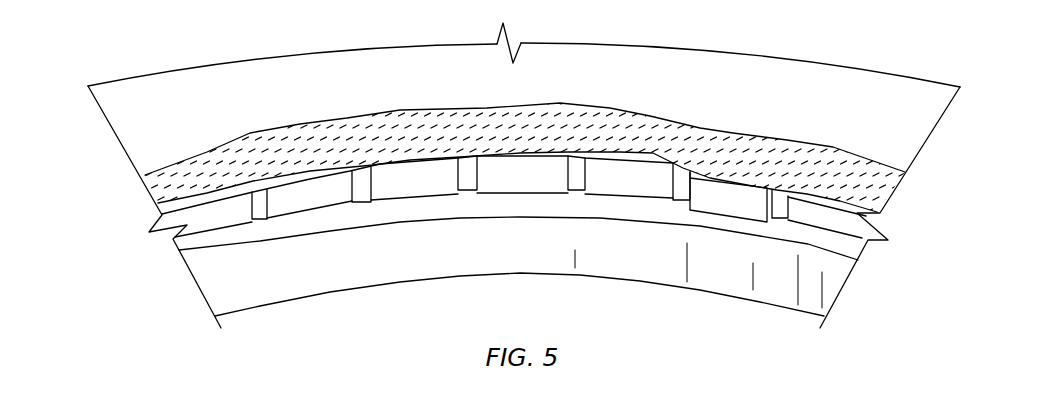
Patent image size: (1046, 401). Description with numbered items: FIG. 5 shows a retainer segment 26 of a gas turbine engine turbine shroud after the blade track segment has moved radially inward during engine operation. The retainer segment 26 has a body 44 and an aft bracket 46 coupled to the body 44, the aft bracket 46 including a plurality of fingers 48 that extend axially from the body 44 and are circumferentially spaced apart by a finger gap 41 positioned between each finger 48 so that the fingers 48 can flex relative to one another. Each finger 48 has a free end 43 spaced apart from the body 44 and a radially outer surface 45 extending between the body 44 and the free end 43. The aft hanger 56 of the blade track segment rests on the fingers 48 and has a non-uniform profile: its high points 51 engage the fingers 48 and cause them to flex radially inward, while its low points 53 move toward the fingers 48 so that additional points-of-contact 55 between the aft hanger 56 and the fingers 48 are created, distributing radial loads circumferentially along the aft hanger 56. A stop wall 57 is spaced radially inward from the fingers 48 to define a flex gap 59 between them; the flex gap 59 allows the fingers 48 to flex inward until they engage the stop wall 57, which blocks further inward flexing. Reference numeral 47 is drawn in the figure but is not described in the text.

The retainer segment 26 is at (89, 115).
The finger gap 41 is at (265, 230).
The free end 43 is at (302, 199).
The body 44 is at (862, 114).
The radially outer surface 45 is at (879, 197).
The aft bracket 46 is at (874, 242).
The third layer 47 is at (338, 179).
The fingers 48 is at (207, 230).
The high points 51 is at (215, 185).
The low points 53 is at (650, 154).
The points-of-contact 55 is at (410, 158).
The aft hanger 56 is at (252, 130).
The stop wall 57 is at (830, 288).
The flex gap 59 is at (810, 244).